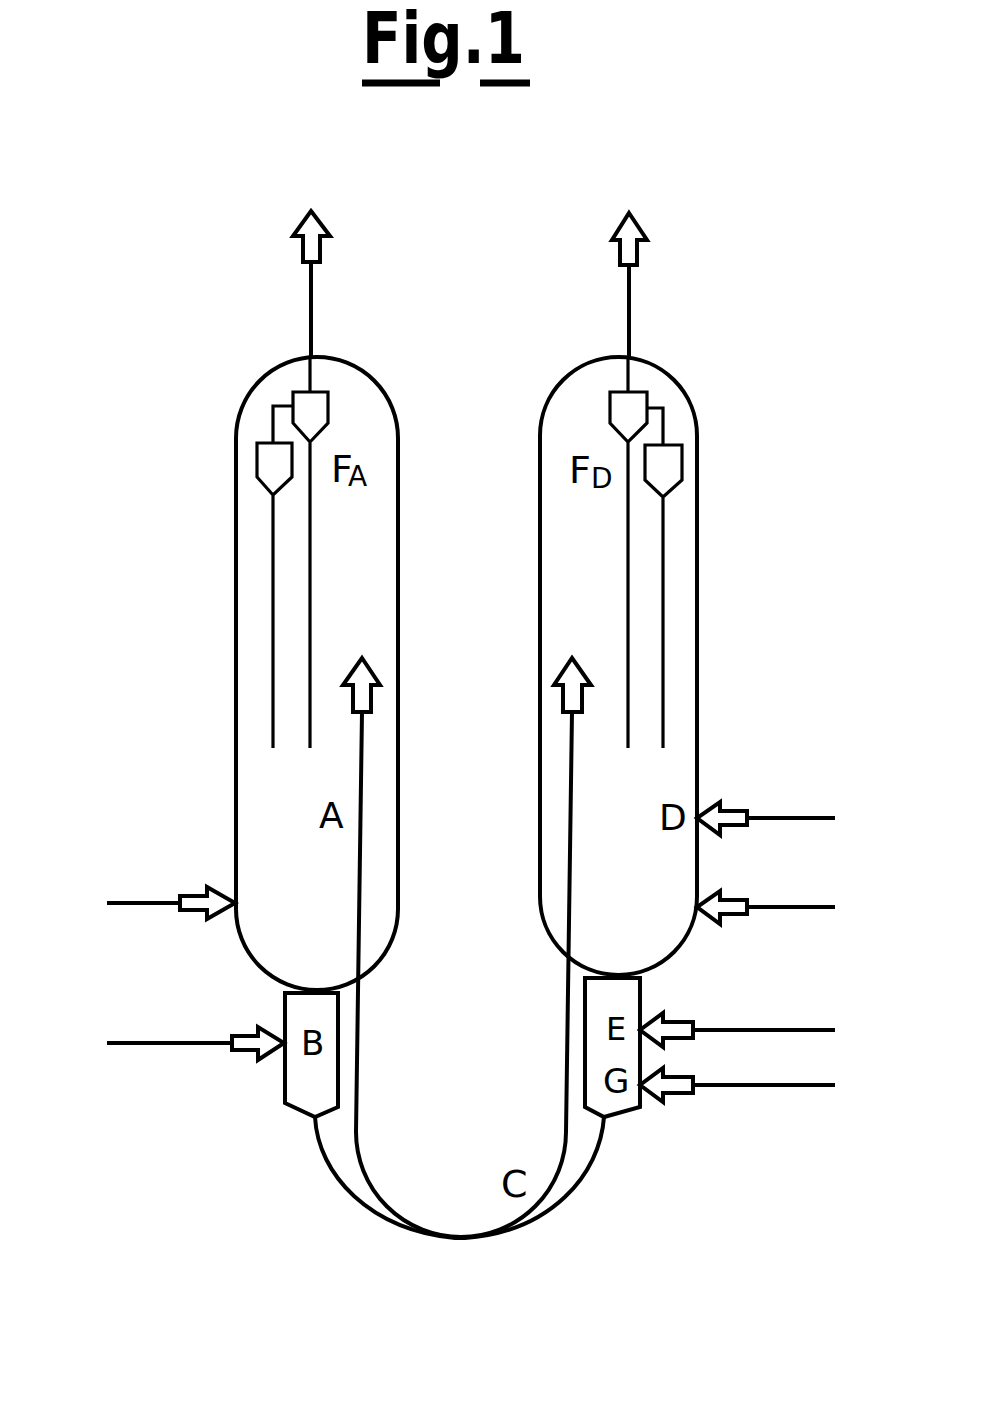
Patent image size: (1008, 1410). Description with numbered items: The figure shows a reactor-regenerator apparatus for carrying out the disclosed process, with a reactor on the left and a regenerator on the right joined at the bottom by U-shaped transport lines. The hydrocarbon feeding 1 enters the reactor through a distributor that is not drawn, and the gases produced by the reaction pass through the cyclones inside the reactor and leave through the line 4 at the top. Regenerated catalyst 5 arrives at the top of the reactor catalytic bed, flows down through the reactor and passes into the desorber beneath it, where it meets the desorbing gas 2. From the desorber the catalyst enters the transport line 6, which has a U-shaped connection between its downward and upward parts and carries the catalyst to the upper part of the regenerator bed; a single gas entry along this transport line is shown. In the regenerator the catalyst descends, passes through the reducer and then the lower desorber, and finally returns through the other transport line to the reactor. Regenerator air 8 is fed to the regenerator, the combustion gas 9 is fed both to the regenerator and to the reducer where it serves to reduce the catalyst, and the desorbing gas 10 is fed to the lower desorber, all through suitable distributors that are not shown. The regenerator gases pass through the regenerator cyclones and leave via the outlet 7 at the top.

The hydrocarbon feeding 1 is at (157, 901).
The desorbing gas 2 is at (181, 1043).
The line 4 is at (305, 284).
The regenerated catalyst 5 is at (538, 975).
The transport line 6 is at (380, 975).
The gas outlet 7 is at (623, 285).
The regenerator air 8 is at (783, 908).
The combustion gas 9 is at (755, 920).
The desorbing gas 10 is at (761, 1079).